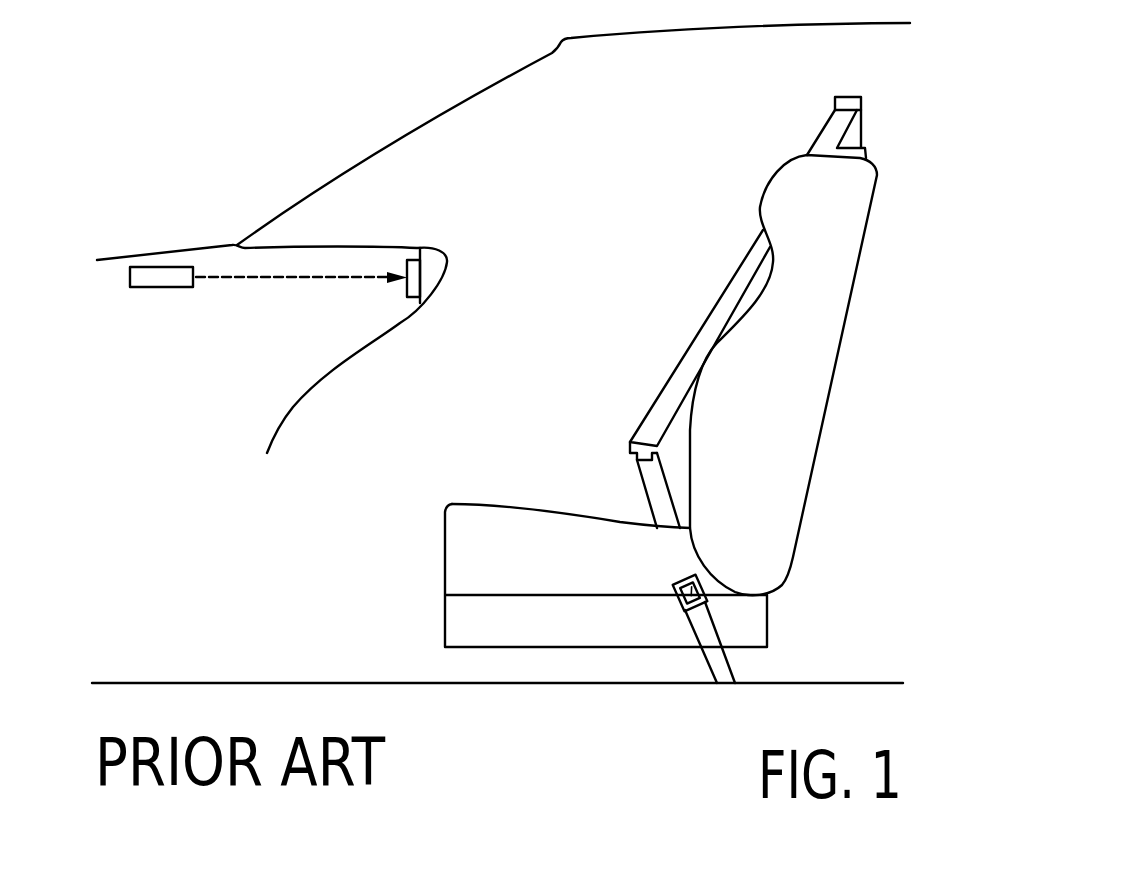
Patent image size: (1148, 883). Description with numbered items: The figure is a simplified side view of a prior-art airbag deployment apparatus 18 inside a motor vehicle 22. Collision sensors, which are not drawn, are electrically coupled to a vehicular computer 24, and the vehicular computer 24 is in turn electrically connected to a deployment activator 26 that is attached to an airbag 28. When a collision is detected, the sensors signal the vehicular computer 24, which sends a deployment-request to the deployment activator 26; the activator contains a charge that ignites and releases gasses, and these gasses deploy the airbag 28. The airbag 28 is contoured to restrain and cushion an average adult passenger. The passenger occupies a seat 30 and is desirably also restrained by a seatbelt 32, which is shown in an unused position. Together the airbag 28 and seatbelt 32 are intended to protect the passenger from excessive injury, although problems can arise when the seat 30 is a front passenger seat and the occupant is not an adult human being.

The airbag deployment apparatus 18 is at (691, 763).
The motor vehicle 22 is at (213, 246).
The vehicular computer 24 is at (153, 287).
The deployment activator 26 is at (407, 284).
The airbag 28 is at (573, 134).
The seat 30 is at (468, 525).
The seatbelt 32 is at (663, 410).